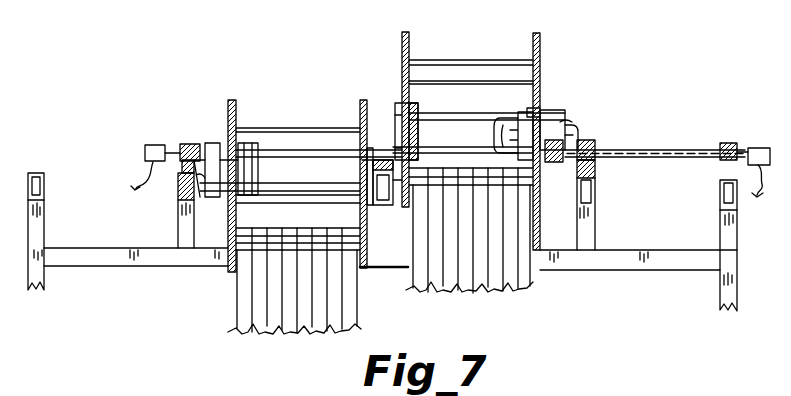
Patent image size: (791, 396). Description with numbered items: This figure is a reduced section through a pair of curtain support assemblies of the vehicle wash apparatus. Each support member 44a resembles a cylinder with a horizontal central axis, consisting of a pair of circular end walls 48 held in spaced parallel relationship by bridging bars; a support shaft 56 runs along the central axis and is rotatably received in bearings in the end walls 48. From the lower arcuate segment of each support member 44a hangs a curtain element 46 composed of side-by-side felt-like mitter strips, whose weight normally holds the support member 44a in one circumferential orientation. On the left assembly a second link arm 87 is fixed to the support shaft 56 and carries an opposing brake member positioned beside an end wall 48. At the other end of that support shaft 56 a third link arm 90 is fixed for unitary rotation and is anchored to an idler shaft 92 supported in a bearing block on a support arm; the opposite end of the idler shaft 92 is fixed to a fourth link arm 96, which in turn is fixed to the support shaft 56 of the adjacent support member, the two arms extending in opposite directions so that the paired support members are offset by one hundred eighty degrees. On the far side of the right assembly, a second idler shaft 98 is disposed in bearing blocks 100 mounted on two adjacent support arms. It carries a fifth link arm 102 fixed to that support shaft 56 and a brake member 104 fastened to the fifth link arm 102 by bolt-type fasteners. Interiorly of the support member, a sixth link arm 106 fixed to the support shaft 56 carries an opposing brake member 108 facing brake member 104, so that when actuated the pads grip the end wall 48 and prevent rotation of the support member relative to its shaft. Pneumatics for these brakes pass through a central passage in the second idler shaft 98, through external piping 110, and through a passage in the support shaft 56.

The support member 44a is at (627, 370).
The curtain element 46 is at (293, 338).
The end wall 48 is at (230, 108).
The support shaft 56 is at (282, 184).
The second link arm 87 is at (253, 173).
The third link arm 90 is at (367, 163).
The idler shaft 92 is at (383, 200).
The fourth link arm 96 is at (407, 130).
The second idler shaft 98 is at (633, 153).
The bearing block 100 is at (590, 145).
The fifth link arm 102 is at (556, 127).
The brake member 104 is at (551, 150).
The sixth link arm 106 is at (512, 160).
The brake member 108 is at (533, 152).
The external piping 110 is at (586, 143).